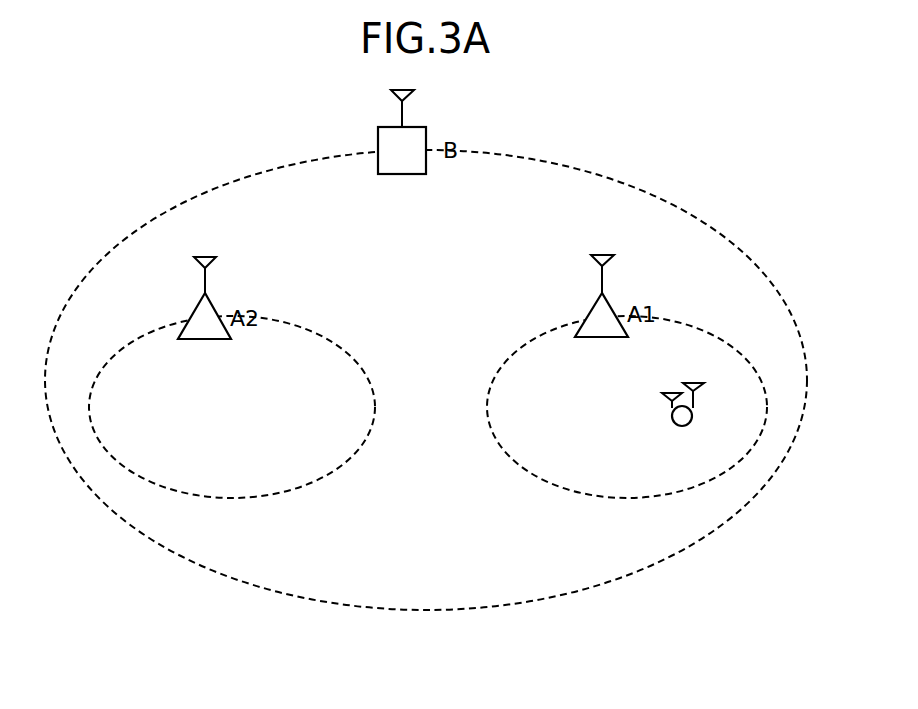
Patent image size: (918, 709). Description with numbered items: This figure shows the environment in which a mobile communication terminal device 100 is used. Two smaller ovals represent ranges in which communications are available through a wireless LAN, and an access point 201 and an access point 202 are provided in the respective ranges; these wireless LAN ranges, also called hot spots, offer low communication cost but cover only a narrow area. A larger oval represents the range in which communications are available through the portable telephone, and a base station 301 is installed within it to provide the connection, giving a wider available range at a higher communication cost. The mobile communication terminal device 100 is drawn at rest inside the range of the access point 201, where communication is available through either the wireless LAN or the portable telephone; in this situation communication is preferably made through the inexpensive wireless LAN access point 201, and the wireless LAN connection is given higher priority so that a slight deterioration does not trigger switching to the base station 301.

The base station 301 is at (378, 140).
The access point 202 is at (190, 312).
The access point 201 is at (586, 315).
The mobile communication terminal device 100 is at (680, 426).